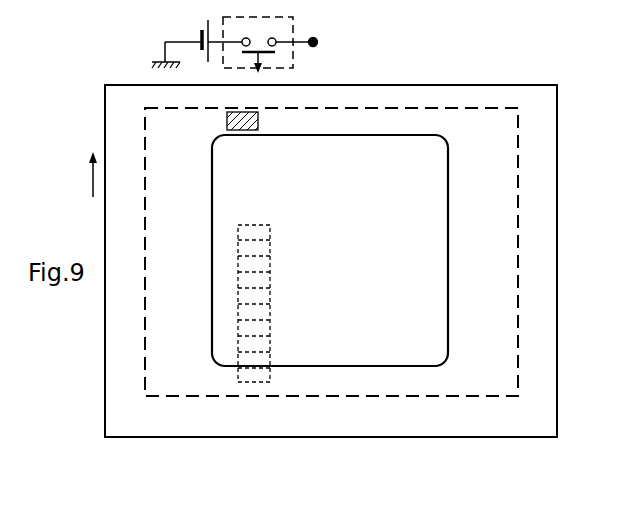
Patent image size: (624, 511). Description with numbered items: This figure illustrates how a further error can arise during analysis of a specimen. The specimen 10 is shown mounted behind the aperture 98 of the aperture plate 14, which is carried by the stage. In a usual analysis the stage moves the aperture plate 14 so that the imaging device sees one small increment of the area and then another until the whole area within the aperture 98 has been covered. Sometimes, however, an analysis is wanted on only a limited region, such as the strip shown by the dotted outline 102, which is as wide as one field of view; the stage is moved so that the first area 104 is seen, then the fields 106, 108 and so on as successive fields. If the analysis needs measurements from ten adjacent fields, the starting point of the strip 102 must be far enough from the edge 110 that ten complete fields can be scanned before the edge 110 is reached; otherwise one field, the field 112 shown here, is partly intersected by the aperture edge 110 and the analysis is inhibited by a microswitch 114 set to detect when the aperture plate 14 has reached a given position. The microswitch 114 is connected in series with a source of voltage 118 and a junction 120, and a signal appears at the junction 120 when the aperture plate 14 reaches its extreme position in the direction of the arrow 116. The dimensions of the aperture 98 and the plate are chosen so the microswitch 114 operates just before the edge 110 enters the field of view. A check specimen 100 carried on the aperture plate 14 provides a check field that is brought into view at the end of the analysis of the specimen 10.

The specimen 10 is at (143, 322).
The aperture plate 14 is at (360, 438).
The aperture 98 is at (448, 228).
The check specimen 100 is at (227, 117).
The strip 102 is at (273, 230).
The first field 104 is at (253, 227).
The second field 106 is at (267, 247).
The third field 108 is at (267, 270).
The aperture edge 110 is at (330, 363).
The intersected field 112 is at (270, 357).
The microswitch 114 is at (292, 58).
The arrow 116 is at (80, 174).
The source of voltage 118 is at (202, 30).
The junction 120 is at (313, 38).